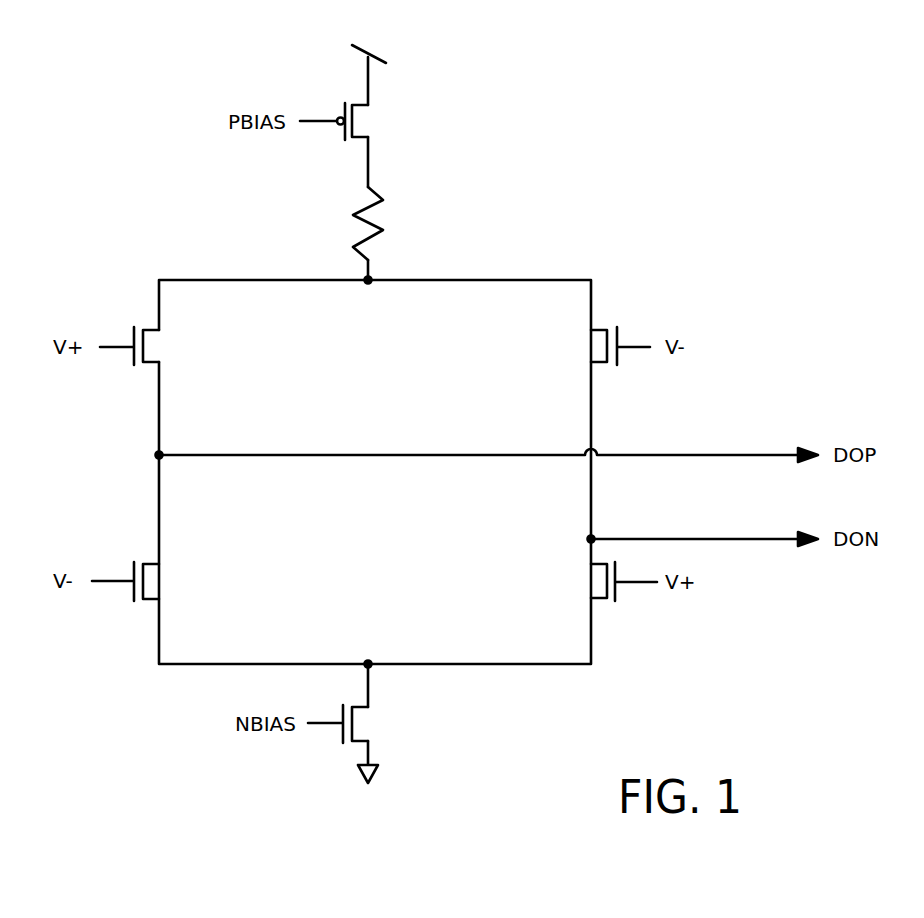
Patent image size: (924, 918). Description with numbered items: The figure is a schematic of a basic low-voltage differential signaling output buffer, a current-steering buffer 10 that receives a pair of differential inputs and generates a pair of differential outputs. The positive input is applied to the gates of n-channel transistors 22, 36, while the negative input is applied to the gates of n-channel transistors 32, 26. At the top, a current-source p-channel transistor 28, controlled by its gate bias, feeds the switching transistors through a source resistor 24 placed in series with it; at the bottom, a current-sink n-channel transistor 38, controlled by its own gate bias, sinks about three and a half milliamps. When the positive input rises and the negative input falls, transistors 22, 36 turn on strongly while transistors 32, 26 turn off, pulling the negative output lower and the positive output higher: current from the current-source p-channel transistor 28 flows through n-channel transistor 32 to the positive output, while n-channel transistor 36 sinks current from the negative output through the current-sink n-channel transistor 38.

The current-steering buffer 10 is at (383, 343).
The n-channel transistor 22 is at (152, 347).
The source resistor 24 is at (390, 213).
The n-channel transistor 26 is at (152, 581).
The current-source p-channel transistor 28 is at (360, 124).
The n-channel transistor 32 is at (591, 345).
The n-channel transistor 36 is at (591, 580).
The current-sink n-channel transistor 38 is at (360, 726).